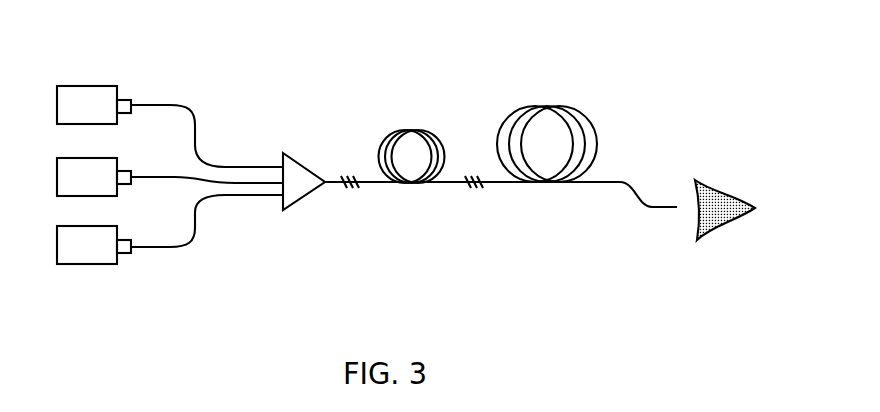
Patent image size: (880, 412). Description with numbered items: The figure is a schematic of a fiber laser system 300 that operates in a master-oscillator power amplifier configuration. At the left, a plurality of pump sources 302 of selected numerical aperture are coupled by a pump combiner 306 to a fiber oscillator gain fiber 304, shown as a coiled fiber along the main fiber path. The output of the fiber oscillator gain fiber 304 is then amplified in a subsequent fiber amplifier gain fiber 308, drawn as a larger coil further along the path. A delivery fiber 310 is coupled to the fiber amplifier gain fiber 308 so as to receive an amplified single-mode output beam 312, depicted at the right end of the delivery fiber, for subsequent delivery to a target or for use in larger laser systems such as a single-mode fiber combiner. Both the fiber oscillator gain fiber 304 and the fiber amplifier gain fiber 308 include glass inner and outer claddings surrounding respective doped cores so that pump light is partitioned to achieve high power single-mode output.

The fiber laser system 300 is at (327, 290).
The pump sources 302 is at (170, 175).
The fiber oscillator gain fiber 304 is at (400, 129).
The pump combiner 306 is at (293, 178).
The fiber amplifier gain fiber 308 is at (543, 106).
The delivery fiber 310 is at (647, 208).
The amplified single-mode output beam 312 is at (712, 208).